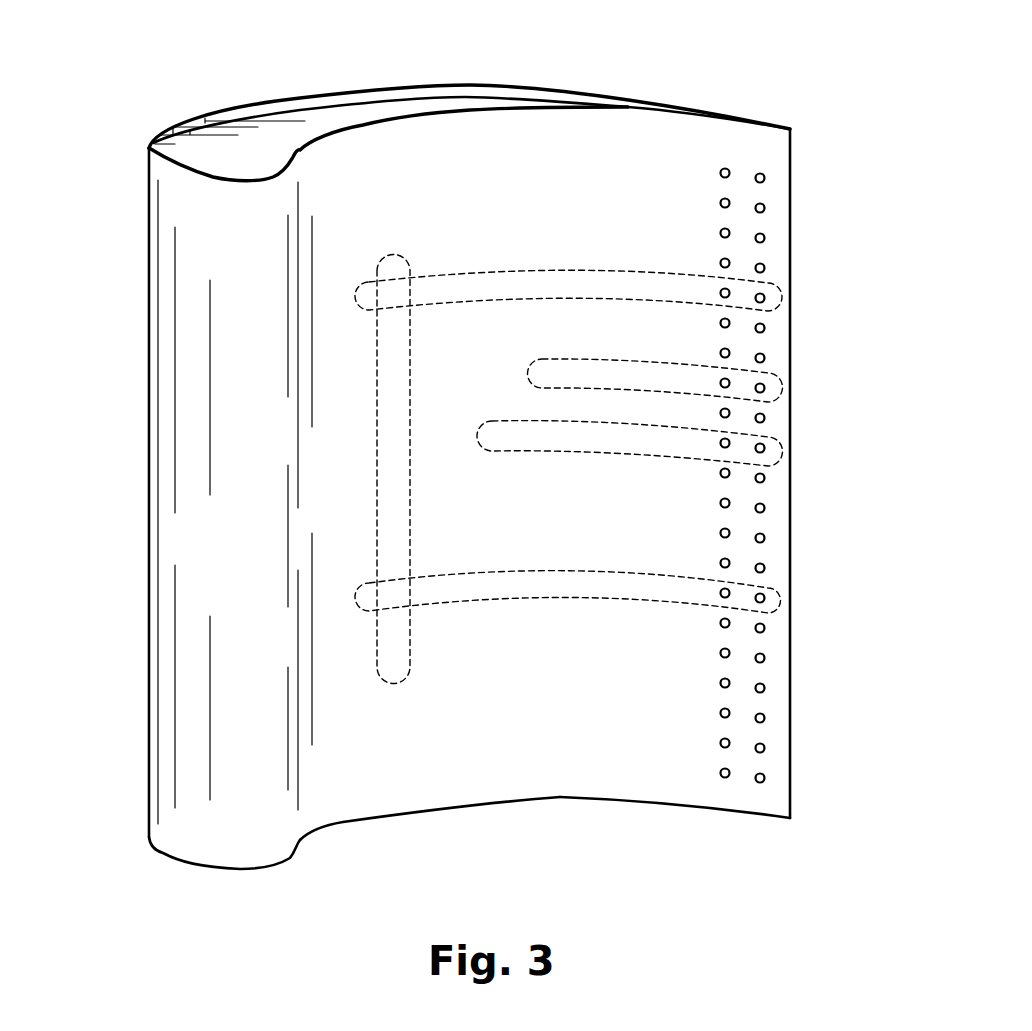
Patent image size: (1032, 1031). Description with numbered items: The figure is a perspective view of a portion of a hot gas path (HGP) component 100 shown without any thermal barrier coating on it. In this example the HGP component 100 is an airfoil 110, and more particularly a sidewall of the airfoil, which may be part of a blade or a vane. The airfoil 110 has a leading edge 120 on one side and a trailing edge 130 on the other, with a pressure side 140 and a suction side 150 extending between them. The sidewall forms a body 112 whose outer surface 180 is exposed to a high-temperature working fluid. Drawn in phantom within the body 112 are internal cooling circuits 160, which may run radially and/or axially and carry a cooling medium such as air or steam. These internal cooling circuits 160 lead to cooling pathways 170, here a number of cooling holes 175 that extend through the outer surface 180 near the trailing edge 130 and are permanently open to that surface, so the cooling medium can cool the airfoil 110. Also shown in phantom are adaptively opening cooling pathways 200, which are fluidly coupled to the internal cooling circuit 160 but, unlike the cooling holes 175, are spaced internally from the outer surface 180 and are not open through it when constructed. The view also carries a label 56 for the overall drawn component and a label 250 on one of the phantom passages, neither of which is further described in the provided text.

The airfoil 56 is at (81, 347).
The hot gas path component 100 is at (108, 116).
The airfoil 110 is at (227, 104).
The body 112 is at (471, 73).
The leading edge 120 is at (164, 853).
The trailing edge 130 is at (790, 773).
The pressure side 140 is at (628, 777).
The suction side 150 is at (549, 84).
The internal cooling circuit 160 is at (645, 290).
The cooling pathways 170 is at (765, 178).
The cooling holes 175 is at (766, 297).
The outer surface 180 is at (460, 780).
The adaptively opening cooling pathway 200 is at (570, 450).
The cooling channel 250 is at (466, 292).